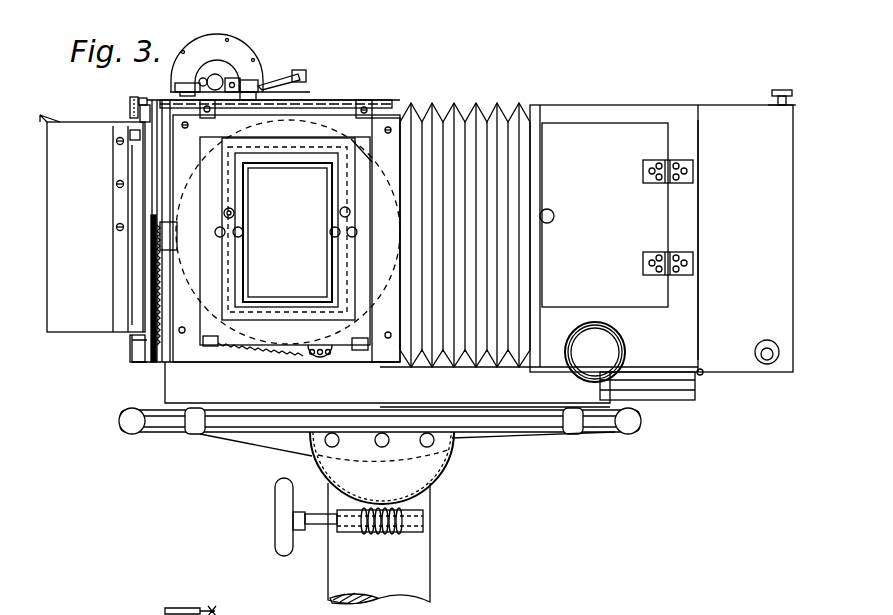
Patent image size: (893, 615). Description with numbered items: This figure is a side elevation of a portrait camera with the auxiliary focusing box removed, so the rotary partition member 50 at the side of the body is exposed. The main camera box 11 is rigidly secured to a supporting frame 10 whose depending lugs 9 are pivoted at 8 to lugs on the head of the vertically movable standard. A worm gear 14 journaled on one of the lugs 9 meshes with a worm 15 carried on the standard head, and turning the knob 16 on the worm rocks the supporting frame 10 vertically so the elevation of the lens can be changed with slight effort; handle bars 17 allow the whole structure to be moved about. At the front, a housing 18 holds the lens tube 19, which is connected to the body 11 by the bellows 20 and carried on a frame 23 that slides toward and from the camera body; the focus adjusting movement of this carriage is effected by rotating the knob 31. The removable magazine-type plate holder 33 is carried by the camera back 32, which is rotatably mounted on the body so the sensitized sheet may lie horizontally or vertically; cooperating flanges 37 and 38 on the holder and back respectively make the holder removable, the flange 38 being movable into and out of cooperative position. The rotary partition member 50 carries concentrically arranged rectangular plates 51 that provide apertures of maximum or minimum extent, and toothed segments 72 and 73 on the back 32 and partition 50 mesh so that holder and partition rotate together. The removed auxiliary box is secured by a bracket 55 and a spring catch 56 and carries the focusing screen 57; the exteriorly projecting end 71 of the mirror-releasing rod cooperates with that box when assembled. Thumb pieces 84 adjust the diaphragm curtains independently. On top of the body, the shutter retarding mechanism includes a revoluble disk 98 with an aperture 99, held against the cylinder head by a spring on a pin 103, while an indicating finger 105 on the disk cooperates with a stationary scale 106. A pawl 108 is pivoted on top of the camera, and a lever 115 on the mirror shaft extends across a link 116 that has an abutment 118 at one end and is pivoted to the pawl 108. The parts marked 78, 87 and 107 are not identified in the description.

The pivot 8 is at (380, 447).
The depending lugs 9 is at (468, 448).
The supporting frame 10 is at (592, 418).
The main camera box 11 is at (340, 100).
The worm gear 14 is at (382, 468).
The worm 15 is at (386, 534).
The knob 16 is at (282, 515).
The handle bars 17 is at (510, 440).
The housing 18 is at (640, 112).
The lens tube 19 is at (386, 118).
The bellows 20 is at (476, 352).
The carriage frame 23 is at (681, 388).
The knob 31 is at (614, 352).
The camera back 32 is at (146, 105).
The plate holder 33 is at (92, 223).
The flange 37 is at (140, 340).
The flange 38 is at (130, 108).
The rotary partition member 50 is at (215, 275).
The rectangular plates 51 is at (235, 213).
The bracket 55 is at (360, 351).
The spring catch 56 is at (364, 100).
The focusing screen 57 is at (141, 99).
The exteriorly projecting end 71 is at (320, 360).
The toothed segment 72 is at (150, 362).
The toothed segment 73 is at (276, 356).
The panel 78 is at (726, 240).
The thumb pieces 84 is at (792, 93).
The block 87 is at (188, 83).
The revoluble disk 98 is at (238, 70).
The aperture 99 is at (212, 74).
The pin 103 is at (236, 78).
The indicating finger 105 is at (250, 80).
The stationary scale 106 is at (214, 42).
The lever 107 is at (208, 604).
The pawl 108 is at (305, 76).
The lever 115 is at (256, 94).
The link 116 is at (272, 84).
The abutment 118 is at (215, 128).